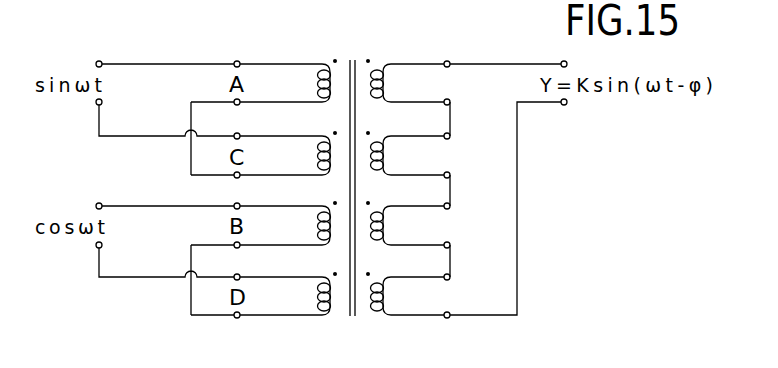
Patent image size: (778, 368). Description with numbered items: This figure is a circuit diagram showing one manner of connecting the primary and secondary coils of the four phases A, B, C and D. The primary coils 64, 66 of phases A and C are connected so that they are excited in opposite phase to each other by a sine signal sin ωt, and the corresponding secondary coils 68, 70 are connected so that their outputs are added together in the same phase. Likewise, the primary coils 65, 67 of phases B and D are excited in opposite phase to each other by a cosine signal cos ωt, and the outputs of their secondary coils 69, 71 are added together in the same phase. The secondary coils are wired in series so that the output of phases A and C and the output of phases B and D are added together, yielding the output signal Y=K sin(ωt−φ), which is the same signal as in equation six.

The primary coil 64 is at (317, 85).
The primary coil 66 is at (317, 157).
The primary coil 65 is at (317, 227).
The primary coil 67 is at (317, 298).
The secondary coil 68 is at (380, 95).
The secondary coil 70 is at (381, 157).
The secondary coil 69 is at (380, 237).
The secondary coil 71 is at (381, 297).